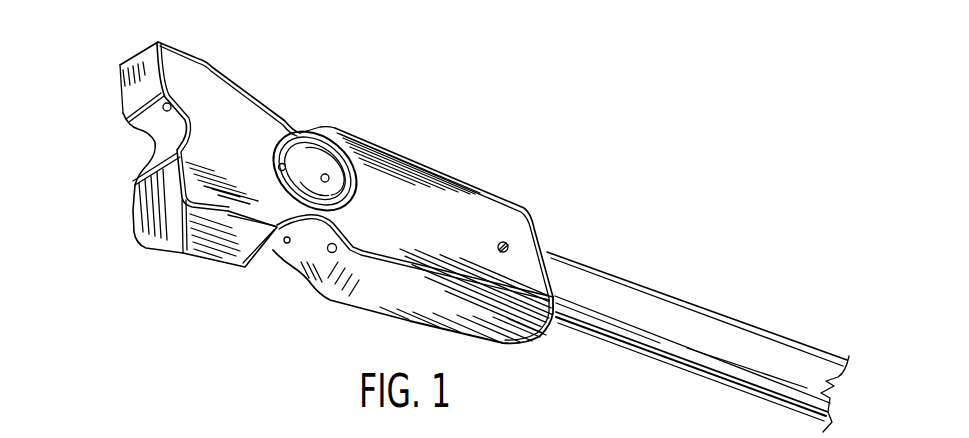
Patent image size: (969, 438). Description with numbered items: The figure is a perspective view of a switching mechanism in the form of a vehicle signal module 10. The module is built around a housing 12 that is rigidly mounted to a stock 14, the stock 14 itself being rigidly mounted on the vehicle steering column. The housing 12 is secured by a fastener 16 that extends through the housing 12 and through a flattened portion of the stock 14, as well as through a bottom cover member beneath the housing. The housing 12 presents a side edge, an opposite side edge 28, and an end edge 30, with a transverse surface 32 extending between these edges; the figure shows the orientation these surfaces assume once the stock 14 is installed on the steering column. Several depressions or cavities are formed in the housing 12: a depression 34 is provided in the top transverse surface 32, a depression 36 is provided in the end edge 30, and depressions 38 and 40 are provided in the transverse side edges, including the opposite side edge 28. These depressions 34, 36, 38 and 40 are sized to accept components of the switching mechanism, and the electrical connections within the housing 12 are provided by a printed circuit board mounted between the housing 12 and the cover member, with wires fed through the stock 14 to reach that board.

The vehicle signal module 10 is at (612, 218).
The housing 12 is at (455, 192).
The stock 14 is at (665, 342).
The fastener 16 is at (506, 241).
The opposite side edge 28 is at (503, 322).
The end edge 30 is at (128, 66).
The transverse surface 32 is at (250, 107).
The depression 34 is at (313, 127).
The depression 36 is at (278, 258).
The depression 38 is at (158, 127).
The depression 40 is at (350, 153).